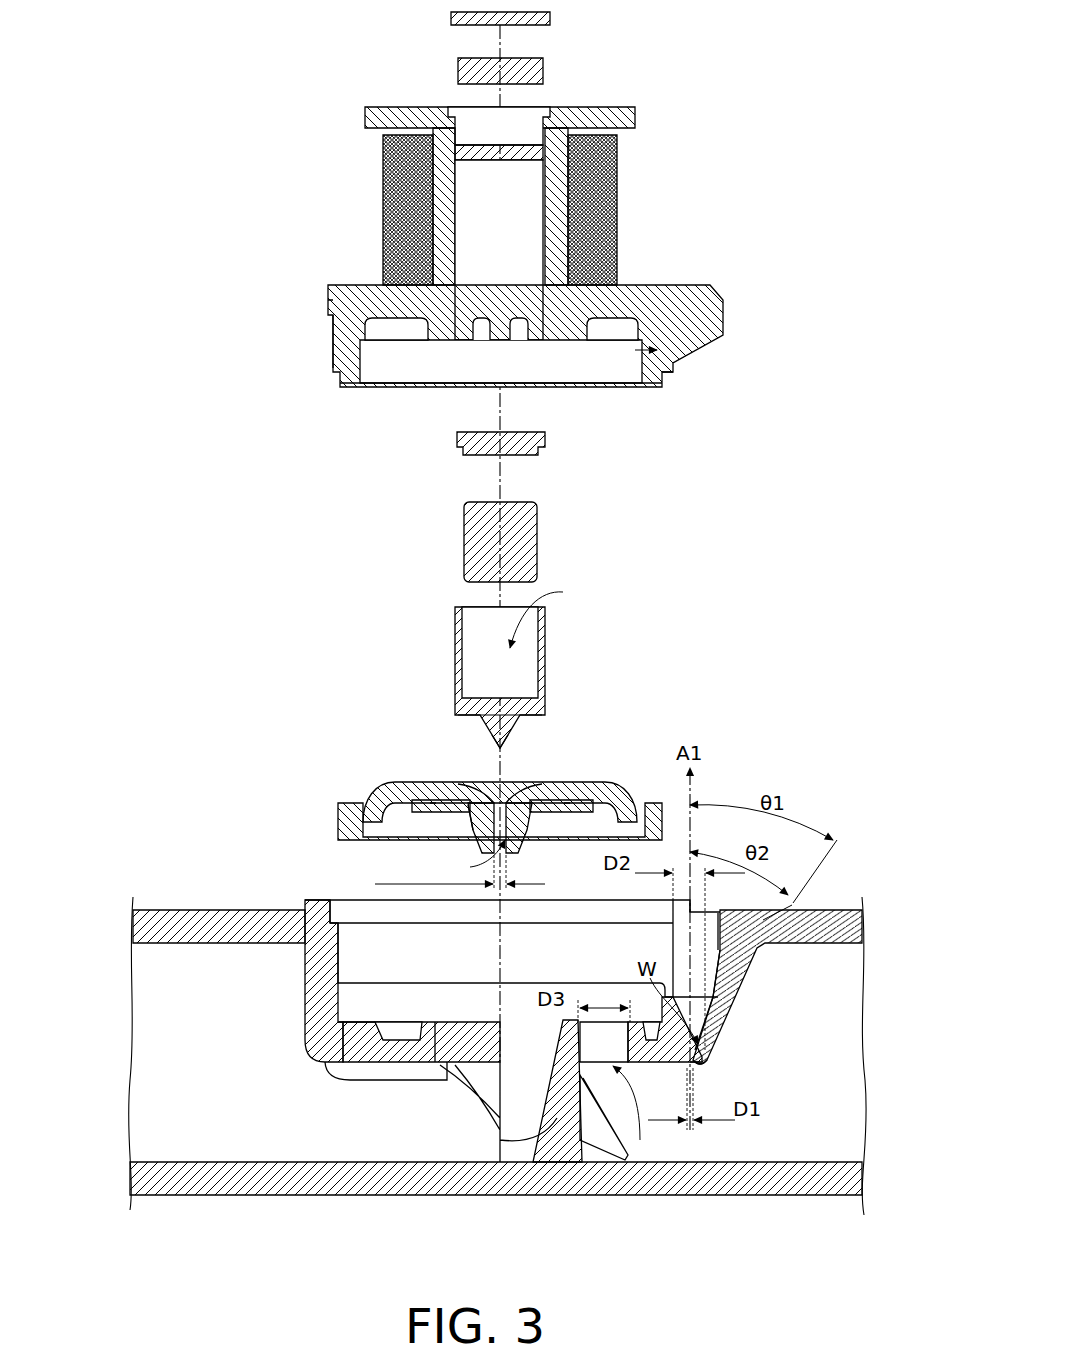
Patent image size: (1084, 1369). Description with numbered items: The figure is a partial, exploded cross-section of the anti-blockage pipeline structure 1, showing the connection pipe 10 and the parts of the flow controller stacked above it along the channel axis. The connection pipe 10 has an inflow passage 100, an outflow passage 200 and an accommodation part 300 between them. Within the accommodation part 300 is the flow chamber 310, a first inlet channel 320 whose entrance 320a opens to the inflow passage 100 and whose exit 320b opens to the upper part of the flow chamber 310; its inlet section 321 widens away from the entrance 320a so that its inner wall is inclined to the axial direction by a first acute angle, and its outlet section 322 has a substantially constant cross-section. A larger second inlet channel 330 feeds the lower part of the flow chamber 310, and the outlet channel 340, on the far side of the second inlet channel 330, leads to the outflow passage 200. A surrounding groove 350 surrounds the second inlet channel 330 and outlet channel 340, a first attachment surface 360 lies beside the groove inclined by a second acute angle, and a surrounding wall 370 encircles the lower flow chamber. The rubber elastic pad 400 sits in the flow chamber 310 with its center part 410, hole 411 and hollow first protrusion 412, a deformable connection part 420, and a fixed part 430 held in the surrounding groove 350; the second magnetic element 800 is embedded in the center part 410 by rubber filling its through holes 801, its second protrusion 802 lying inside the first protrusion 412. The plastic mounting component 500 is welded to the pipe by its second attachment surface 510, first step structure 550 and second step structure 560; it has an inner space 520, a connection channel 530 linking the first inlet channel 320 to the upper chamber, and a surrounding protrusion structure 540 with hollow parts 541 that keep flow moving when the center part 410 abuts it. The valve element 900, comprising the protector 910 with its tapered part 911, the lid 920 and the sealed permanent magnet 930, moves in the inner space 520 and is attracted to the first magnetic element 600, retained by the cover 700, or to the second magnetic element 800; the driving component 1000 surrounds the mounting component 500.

The anti-blockage pipeline structure 1 is at (133, 12).
The connection pipe 10 is at (498, 1084).
The inflow passage 100 is at (750, 1195).
The outflow passage 200 is at (345, 1198).
The accommodation part 300 is at (554, 1068).
The flow chamber 310 is at (392, 945).
The first inlet channel 320 is at (776, 1003).
The entrance 320a is at (696, 1070).
The exit 320b is at (700, 987).
The inlet section 321 is at (708, 1062).
The outlet section 322 is at (718, 1017).
The second inlet channel 330 is at (582, 1075).
The outlet channel 340 is at (527, 1098).
The surrounding groove 350 is at (348, 1019).
The first attachment surface 360 is at (718, 928).
The surrounding wall 370 is at (568, 1049).
The elastic pad 400 is at (429, 804).
The center part 410 is at (400, 790).
The hole 411 is at (505, 786).
The first protrusion 412 is at (520, 838).
The connection part 420 is at (382, 803).
The fixed part 430 is at (346, 826).
The mounting component 500 is at (513, 265).
The second attachment surface 510 is at (722, 342).
The inner space 520 is at (517, 225).
The connection channel 530 is at (640, 312).
The surrounding protrusion structure 540 is at (438, 328).
The hollow parts 541 is at (481, 345).
The first step structure 550 is at (337, 375).
The second step structure 560 is at (335, 312).
The first magnetic element 600 is at (528, 70).
The cover 700 is at (540, 18).
The second magnetic element 800 is at (478, 795).
The through holes 801 is at (433, 804).
The second protrusion 802 is at (470, 826).
The valve element 900 is at (408, 603).
The protector 910 is at (455, 670).
The tapered part 911 is at (498, 748).
The lid 920 is at (476, 456).
The permanent magnet 930 is at (478, 535).
The driving component 1000 is at (388, 188).